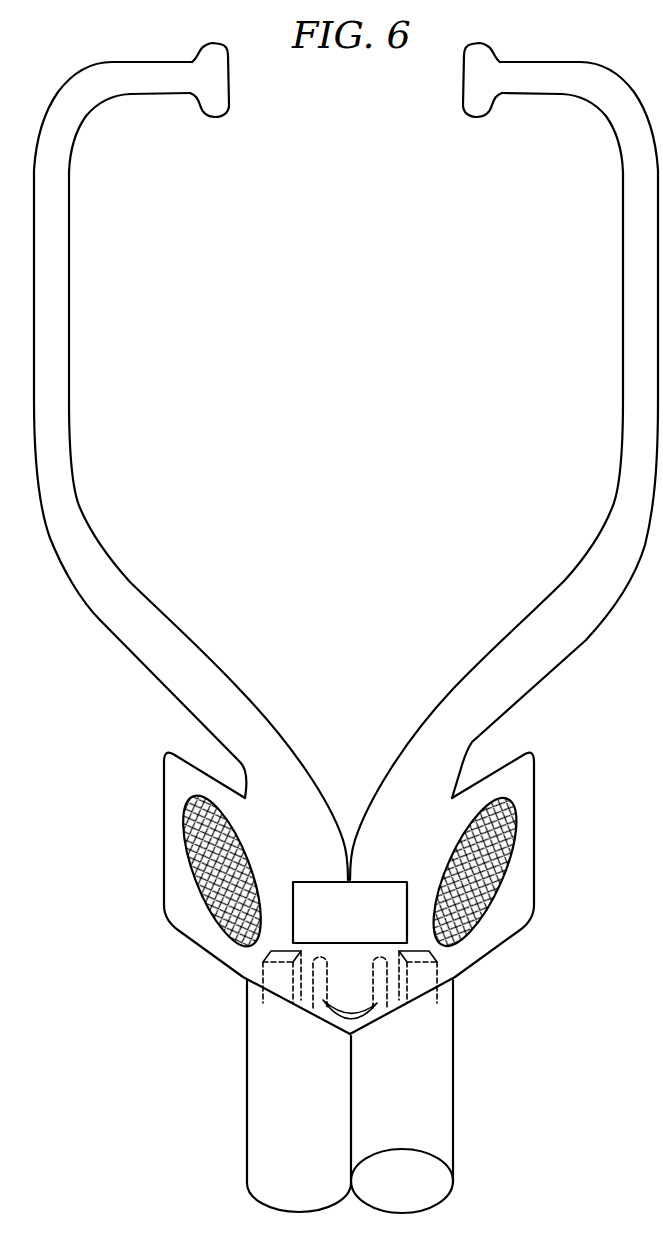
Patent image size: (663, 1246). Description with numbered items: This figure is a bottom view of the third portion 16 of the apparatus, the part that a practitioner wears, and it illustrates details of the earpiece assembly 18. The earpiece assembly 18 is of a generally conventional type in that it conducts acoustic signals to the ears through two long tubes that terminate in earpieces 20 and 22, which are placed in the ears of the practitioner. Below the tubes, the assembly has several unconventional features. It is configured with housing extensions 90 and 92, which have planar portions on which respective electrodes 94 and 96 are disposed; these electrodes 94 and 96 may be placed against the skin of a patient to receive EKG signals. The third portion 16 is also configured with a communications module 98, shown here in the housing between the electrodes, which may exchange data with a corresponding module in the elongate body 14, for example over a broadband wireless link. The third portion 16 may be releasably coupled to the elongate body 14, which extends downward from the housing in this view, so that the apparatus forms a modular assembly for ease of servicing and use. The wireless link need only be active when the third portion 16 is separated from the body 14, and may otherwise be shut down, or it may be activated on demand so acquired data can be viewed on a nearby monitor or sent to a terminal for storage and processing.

The elongate body 14 is at (442, 1133).
The third portion 16 is at (346, 628).
The earpiece assembly 18 is at (478, 668).
The earpiece 20 is at (463, 103).
The earpiece 22 is at (228, 114).
The housing extension 90 is at (165, 908).
The housing extension 92 is at (537, 925).
The electrode 94 is at (183, 847).
The electrode 96 is at (497, 866).
The communications module 98 is at (384, 882).